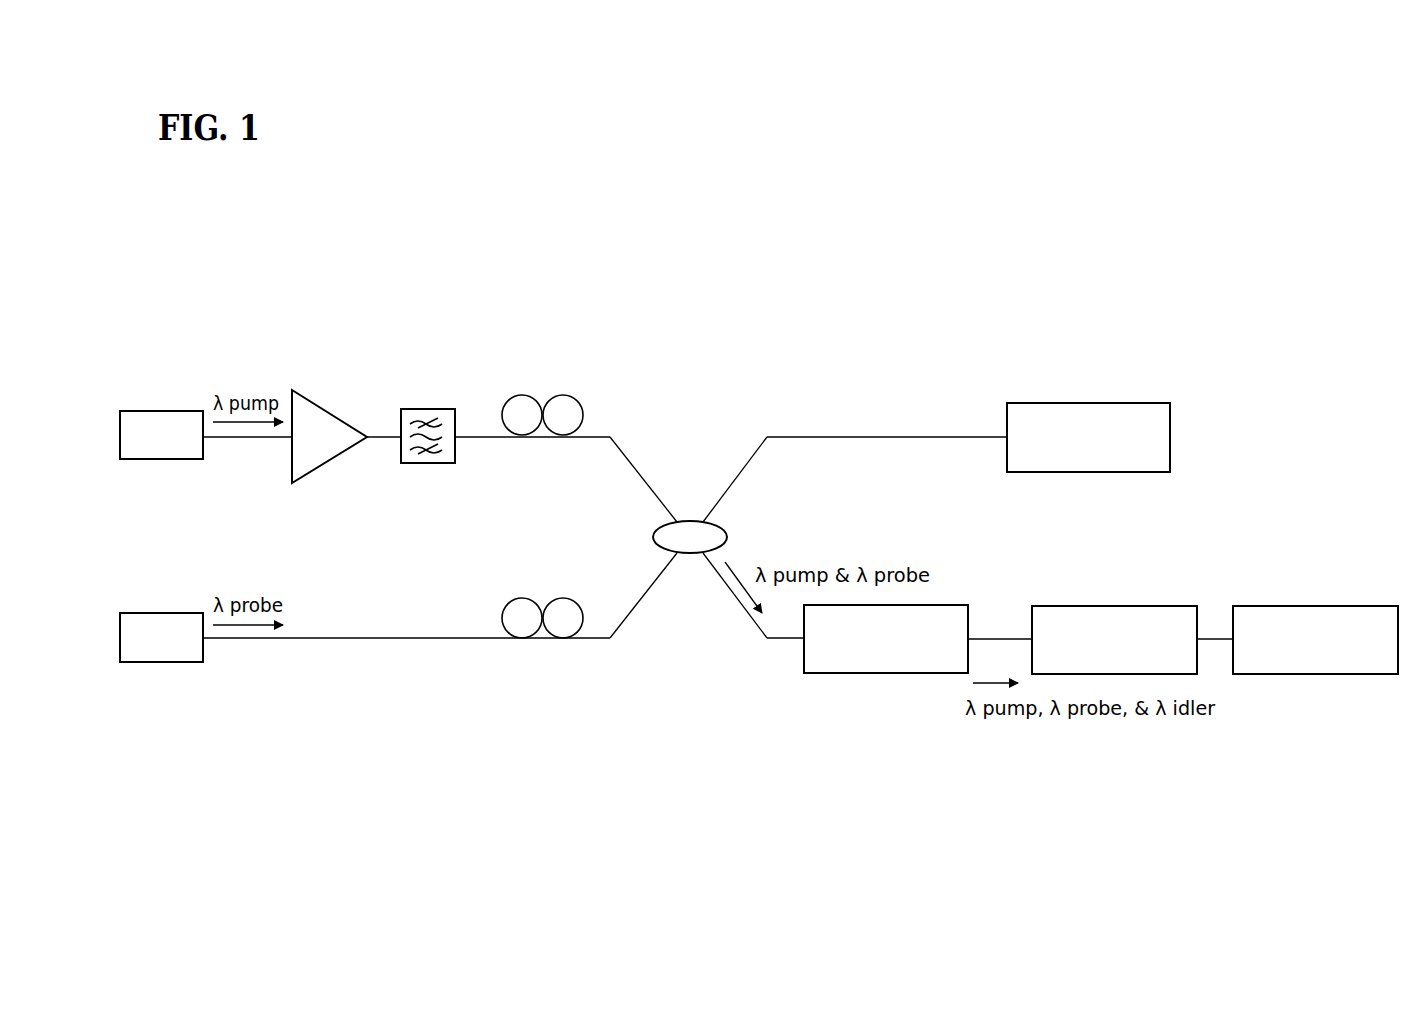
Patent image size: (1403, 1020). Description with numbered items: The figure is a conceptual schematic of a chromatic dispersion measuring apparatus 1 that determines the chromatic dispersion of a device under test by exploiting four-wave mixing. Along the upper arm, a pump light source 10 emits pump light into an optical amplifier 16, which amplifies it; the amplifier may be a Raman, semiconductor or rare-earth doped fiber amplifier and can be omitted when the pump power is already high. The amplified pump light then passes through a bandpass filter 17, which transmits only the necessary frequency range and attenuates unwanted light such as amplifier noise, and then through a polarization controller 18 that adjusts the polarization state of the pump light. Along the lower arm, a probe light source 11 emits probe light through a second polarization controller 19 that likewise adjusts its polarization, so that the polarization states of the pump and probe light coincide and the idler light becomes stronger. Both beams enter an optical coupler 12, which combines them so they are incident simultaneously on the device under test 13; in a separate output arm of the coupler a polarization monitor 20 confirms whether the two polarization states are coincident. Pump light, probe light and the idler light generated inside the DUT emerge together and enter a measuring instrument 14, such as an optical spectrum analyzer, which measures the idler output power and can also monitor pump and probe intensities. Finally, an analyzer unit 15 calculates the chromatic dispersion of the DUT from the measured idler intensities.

The chromatic dispersion measuring apparatus 1 is at (1178, 285).
The pump light source 10 is at (160, 411).
The probe light source 11 is at (160, 613).
The optical coupler 12 is at (727, 537).
The device under test (DUT) 13 is at (955, 605).
The measuring instrument 14 is at (1158, 606).
The analyzer unit 15 is at (1358, 606).
The optical amplifier 16 is at (330, 403).
The bandpass filter 17 is at (428, 409).
The polarization controller 18 is at (563, 395).
The polarization controller 19 is at (563, 598).
The polarization monitor 20 is at (1135, 403).